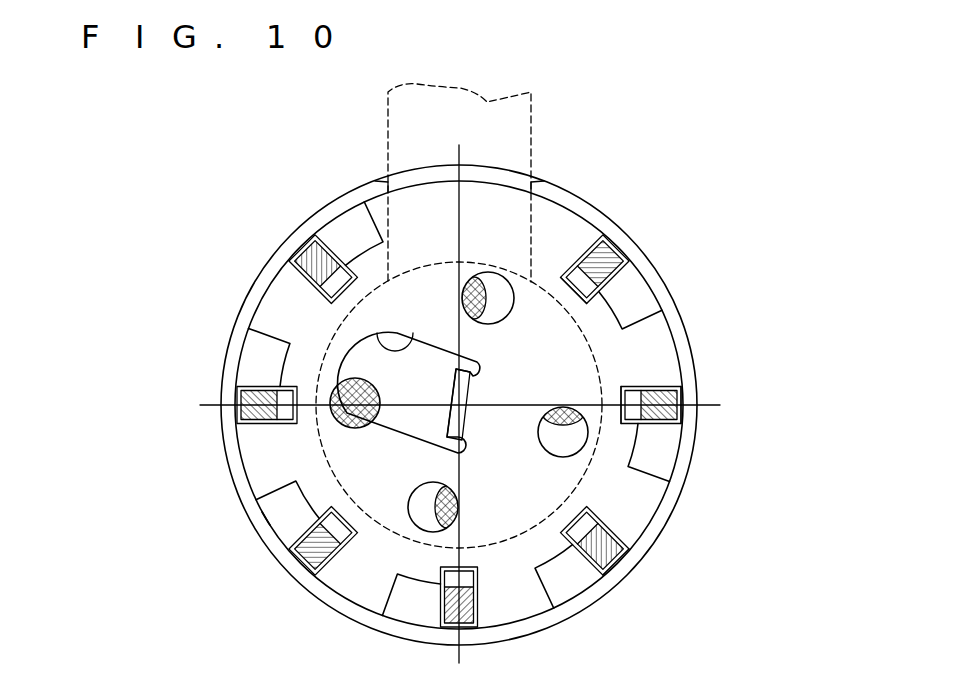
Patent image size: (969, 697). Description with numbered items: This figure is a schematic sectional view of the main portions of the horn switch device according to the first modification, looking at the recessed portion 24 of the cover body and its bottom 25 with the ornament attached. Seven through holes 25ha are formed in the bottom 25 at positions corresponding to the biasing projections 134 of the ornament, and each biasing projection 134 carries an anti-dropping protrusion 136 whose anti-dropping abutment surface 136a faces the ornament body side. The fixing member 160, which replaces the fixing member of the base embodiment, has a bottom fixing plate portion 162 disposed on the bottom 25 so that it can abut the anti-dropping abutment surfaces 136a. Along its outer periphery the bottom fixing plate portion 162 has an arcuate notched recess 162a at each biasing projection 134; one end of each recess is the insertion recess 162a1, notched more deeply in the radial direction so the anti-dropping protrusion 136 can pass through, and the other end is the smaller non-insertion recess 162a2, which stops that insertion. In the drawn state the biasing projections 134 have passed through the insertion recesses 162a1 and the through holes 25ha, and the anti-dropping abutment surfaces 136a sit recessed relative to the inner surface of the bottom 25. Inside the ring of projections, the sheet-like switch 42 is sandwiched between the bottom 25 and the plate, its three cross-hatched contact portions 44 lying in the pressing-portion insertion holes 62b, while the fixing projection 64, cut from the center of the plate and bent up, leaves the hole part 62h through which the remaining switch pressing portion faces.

The recessed portion 24 is at (232, 476).
The bottom 25 is at (270, 525).
The through holes 25ha is at (668, 421).
The sheet-like switch 42 is at (531, 120).
The contact portions 44 is at (374, 428).
The pressing-portion insertion holes 62b is at (510, 305).
The hole part 62h is at (408, 338).
The fixing projection 64 is at (450, 418).
The biasing projections 134 is at (590, 257).
The anti-dropping protrusion 136 is at (566, 266).
The anti-dropping abutment surface 136a is at (560, 290).
The fixing member 160 is at (677, 343).
The bottom fixing plate portion 162 is at (550, 400).
The notched recess 162a is at (550, 424).
The insertion recess 162a1 is at (625, 255).
The non-insertion recess 162a2 is at (617, 310).